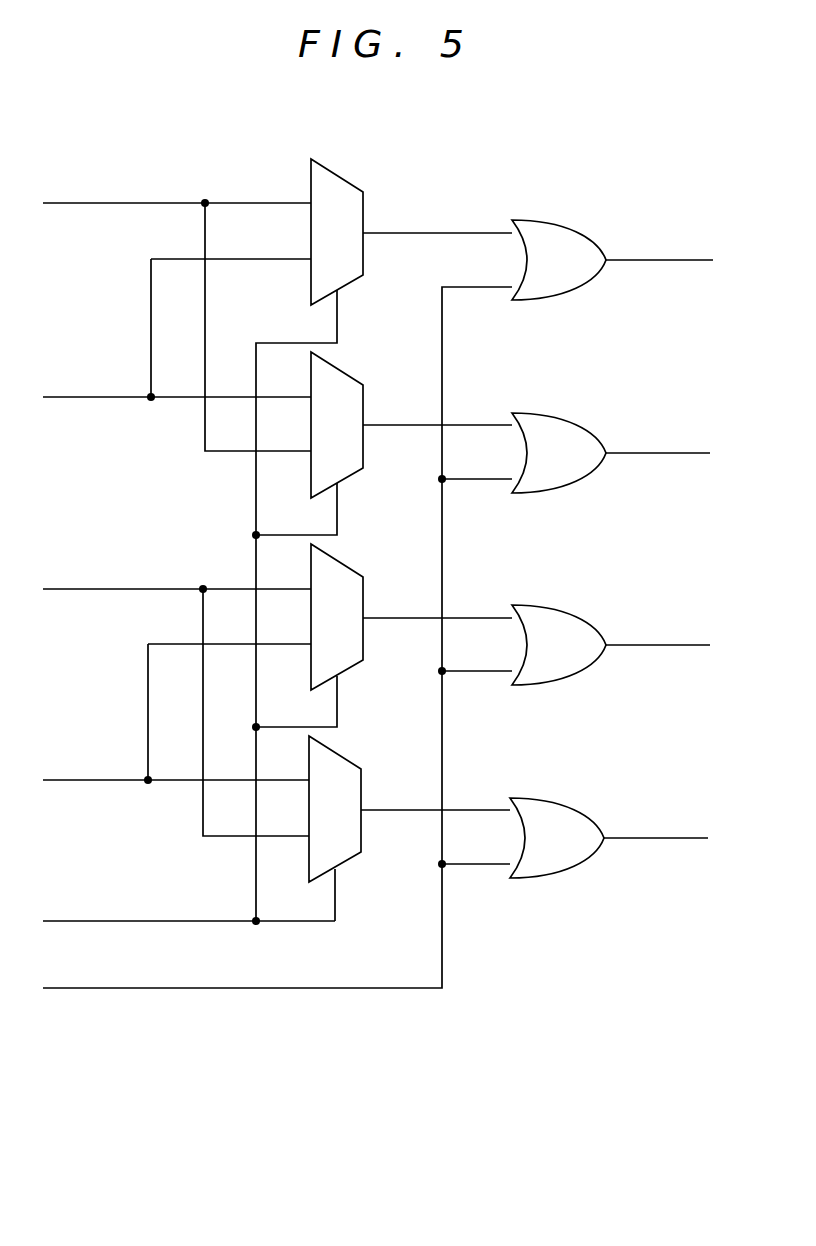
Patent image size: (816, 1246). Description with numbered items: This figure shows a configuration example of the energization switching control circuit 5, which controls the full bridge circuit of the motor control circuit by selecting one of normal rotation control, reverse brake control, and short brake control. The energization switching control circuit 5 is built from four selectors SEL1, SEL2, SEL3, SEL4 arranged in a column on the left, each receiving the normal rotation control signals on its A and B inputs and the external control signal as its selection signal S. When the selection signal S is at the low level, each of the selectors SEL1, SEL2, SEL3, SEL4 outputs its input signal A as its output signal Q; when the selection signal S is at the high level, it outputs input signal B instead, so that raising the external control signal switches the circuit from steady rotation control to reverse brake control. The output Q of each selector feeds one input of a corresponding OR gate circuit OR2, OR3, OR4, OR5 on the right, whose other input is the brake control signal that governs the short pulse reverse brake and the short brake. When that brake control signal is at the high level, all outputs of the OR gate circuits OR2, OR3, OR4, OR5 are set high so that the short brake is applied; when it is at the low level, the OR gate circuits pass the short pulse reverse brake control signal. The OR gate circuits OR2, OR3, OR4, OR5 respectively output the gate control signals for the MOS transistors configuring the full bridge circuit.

The energization switching control circuit 5 is at (540, 1023).
The selector SEL1 is at (345, 248).
The selector SEL2 is at (345, 441).
The selector SEL3 is at (345, 633).
The selector SEL4 is at (342, 826).
The OR gate circuit OR2 is at (559, 246).
The OR gate circuit OR3 is at (559, 438).
The OR gate circuit OR4 is at (559, 631).
The OR gate circuit OR5 is at (557, 823).